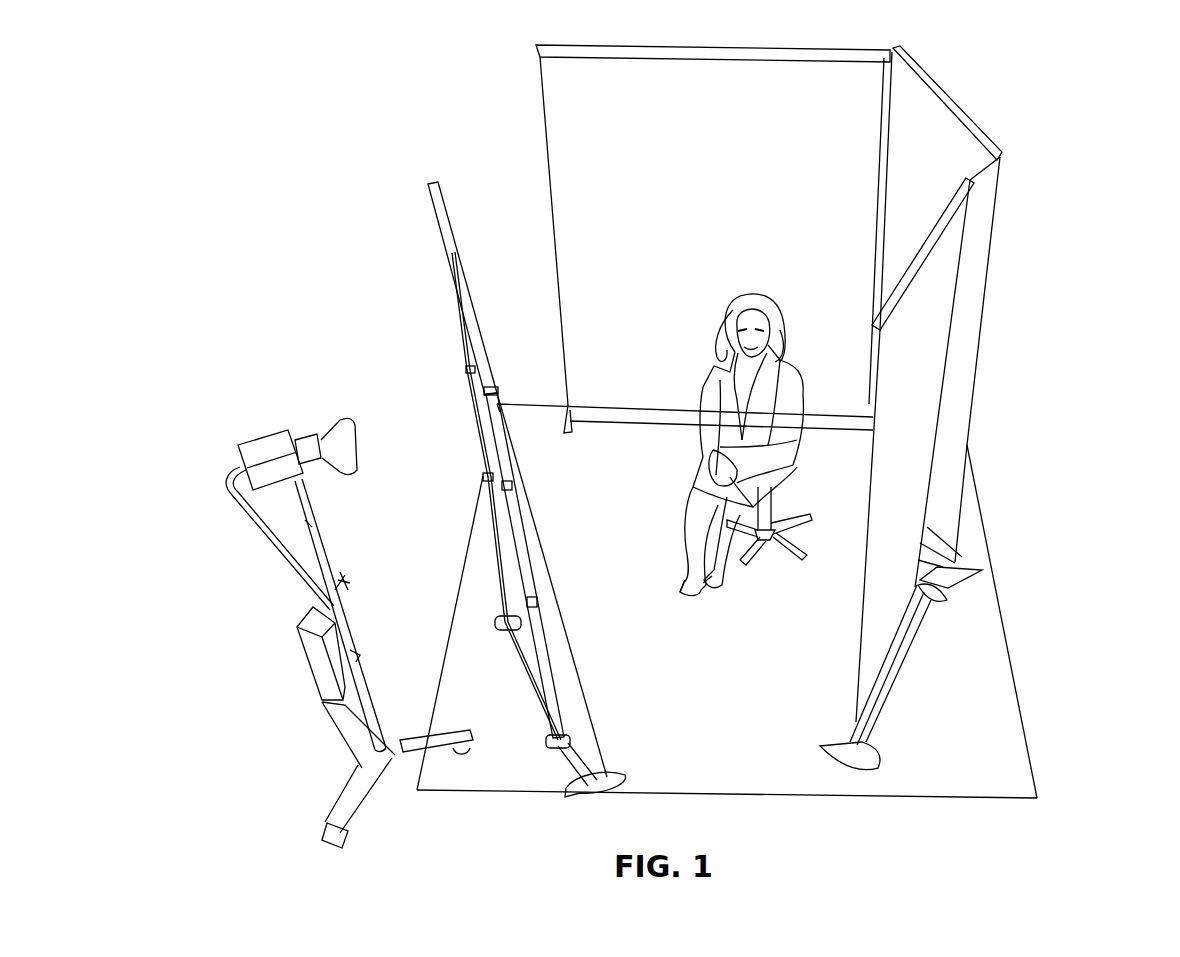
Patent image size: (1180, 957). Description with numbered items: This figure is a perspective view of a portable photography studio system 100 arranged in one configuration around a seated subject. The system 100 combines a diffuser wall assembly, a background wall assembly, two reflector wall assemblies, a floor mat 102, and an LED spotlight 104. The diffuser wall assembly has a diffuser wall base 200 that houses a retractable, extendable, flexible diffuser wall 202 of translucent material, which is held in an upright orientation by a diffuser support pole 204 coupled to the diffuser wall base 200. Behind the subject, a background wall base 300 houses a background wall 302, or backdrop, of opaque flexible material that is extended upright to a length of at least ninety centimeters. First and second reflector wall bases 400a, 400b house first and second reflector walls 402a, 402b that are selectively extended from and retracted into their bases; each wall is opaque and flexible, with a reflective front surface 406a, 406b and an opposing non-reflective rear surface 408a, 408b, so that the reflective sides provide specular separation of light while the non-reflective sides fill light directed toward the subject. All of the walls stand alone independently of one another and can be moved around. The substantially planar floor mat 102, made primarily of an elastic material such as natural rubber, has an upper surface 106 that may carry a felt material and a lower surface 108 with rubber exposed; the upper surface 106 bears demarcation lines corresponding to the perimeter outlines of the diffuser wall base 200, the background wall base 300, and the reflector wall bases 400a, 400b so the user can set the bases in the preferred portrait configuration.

The portable photography studio system 100 is at (374, 390).
The floor mat 102 is at (980, 640).
The LED spotlight 104 is at (272, 449).
The upper surface 106 is at (998, 753).
The lower surface 108 is at (1003, 804).
The diffuser wall base 200 is at (565, 748).
The diffuser wall 202 is at (548, 637).
The diffuser support pole 204 is at (525, 572).
The background wall base 300 is at (585, 416).
The background wall 302 is at (577, 248).
The first reflector wall base 400a is at (950, 575).
The second reflector wall base 400b is at (845, 752).
The first reflector wall 402a is at (963, 165).
The second reflector wall 402b is at (930, 285).
The reflective front surface 406a is at (938, 132).
The reflective front surface 406b is at (852, 649).
The non-reflective rear surface 408a is at (984, 369).
The non-reflective rear surface 408b is at (921, 419).